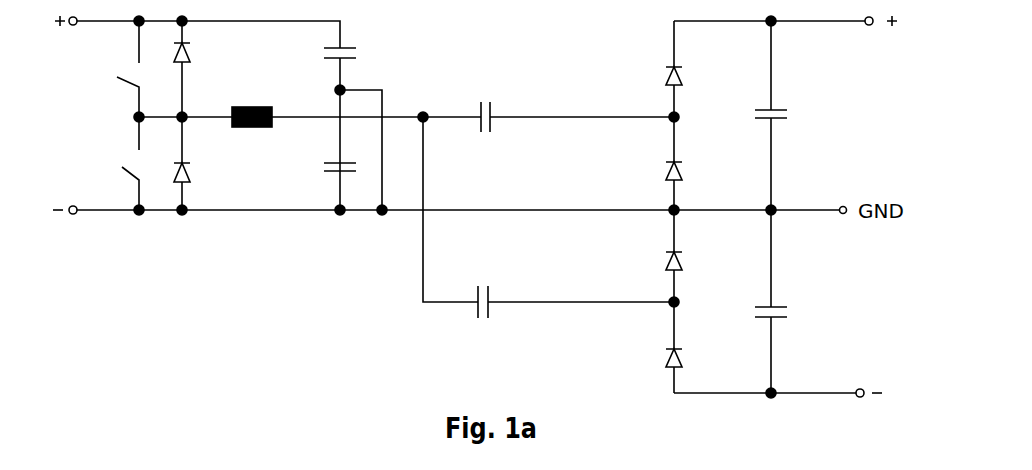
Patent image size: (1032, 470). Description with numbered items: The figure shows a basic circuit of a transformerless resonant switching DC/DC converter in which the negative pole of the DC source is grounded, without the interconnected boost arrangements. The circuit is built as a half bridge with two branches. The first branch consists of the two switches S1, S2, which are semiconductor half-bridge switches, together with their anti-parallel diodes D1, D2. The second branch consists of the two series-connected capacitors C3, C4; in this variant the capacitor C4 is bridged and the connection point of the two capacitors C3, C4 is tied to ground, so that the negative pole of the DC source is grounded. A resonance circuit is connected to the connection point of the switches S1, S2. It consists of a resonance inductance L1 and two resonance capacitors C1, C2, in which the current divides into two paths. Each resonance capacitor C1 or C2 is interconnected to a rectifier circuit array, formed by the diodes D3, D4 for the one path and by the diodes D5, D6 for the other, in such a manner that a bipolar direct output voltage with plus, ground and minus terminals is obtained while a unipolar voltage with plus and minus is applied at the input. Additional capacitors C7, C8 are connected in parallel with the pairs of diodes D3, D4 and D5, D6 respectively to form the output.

The switch S1 is at (118, 85).
The switch S2 is at (118, 188).
The anti-parallel diode D1 is at (201, 69).
The anti-parallel diode D2 is at (201, 163).
The rectifier diode D3 is at (692, 69).
The rectifier diode D4 is at (692, 163).
The rectifier diode D5 is at (692, 256).
The rectifier diode D6 is at (692, 347).
The resonance inductance L1 is at (356, 101).
The resonance capacitor C1 is at (576, 104).
The resonance capacitor C2 is at (548, 232).
The series-connected capacitor C3 is at (323, 53).
The series-connected capacitor C4 is at (323, 167).
The additional capacitor C7 is at (788, 115).
The additional capacitor C8 is at (788, 301).